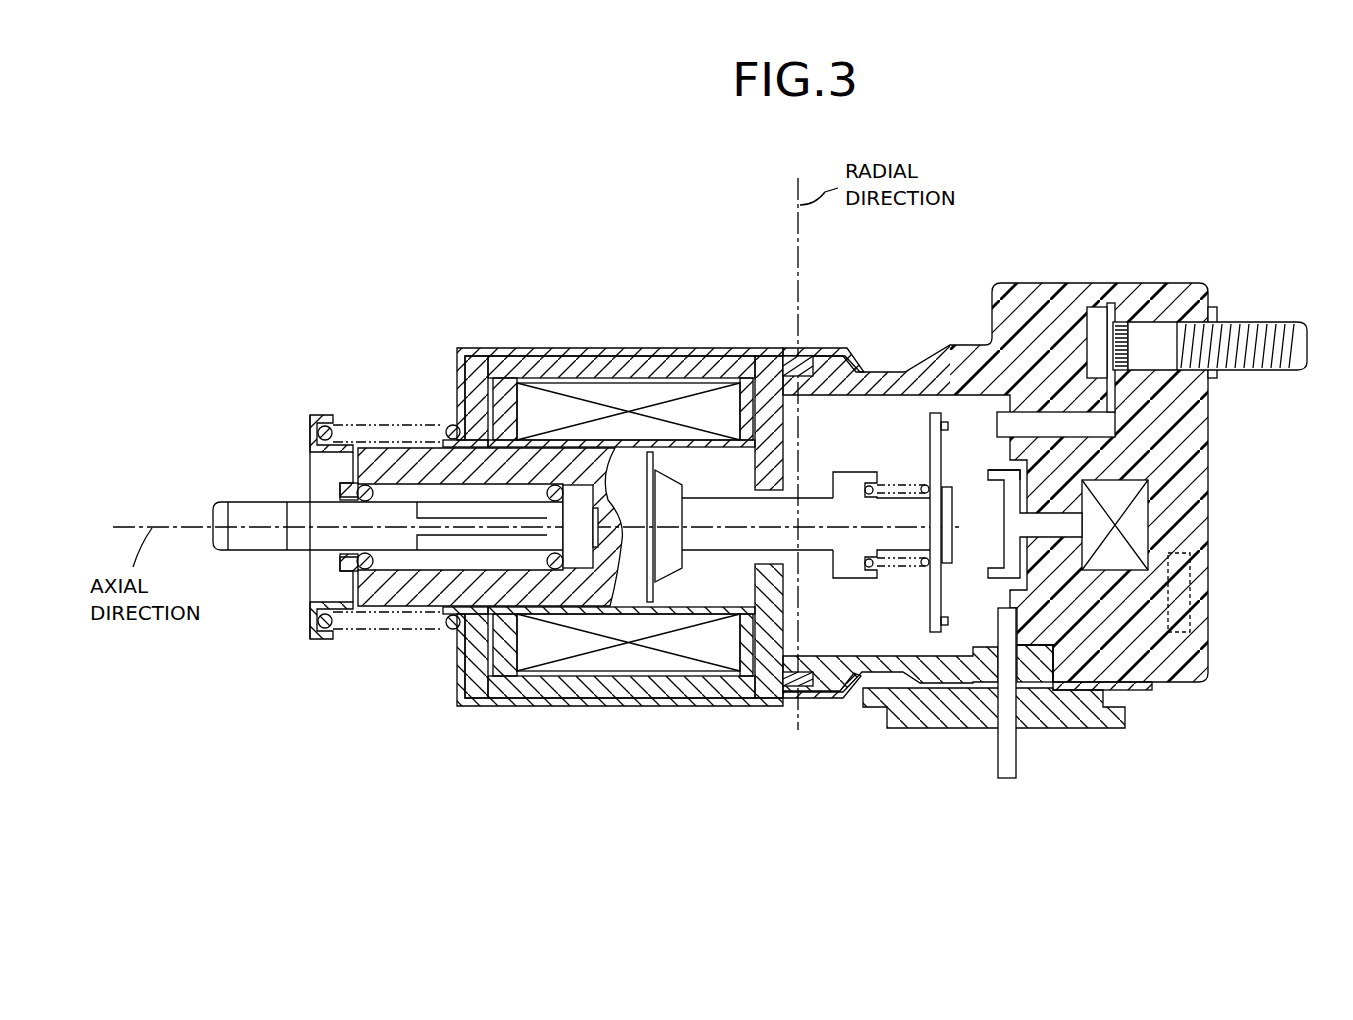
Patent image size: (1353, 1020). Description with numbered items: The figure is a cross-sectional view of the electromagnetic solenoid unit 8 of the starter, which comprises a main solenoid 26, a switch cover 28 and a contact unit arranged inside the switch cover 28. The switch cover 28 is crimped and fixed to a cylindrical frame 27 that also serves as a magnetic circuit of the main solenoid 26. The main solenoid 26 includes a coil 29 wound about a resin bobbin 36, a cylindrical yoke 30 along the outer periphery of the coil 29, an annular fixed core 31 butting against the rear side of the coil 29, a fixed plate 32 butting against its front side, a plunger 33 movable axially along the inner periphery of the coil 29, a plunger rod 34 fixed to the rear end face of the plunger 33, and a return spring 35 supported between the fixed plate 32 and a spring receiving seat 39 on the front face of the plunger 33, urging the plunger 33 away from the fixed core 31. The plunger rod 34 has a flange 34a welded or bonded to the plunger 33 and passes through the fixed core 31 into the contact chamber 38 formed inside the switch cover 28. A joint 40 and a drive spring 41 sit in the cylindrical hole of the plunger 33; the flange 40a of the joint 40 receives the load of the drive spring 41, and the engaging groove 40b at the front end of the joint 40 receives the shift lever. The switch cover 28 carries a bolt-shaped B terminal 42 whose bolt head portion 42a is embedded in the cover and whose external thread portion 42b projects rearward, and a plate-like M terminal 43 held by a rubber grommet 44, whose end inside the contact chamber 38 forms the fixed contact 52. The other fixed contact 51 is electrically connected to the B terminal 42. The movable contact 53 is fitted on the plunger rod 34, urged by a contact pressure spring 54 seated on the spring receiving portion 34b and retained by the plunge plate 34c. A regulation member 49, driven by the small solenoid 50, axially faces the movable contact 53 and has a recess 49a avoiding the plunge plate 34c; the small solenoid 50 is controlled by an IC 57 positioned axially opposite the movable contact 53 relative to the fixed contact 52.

The electromagnetic solenoid unit 8 is at (398, 250).
The main solenoid 26 is at (640, 348).
The cylindrical frame 27 is at (545, 378).
The switch cover 28 is at (1183, 447).
The coil 29 is at (605, 395).
The cylindrical yoke 30 is at (700, 358).
The annular fixed core 31 is at (768, 356).
The fixed plate 32 is at (477, 370).
The plunger 33 is at (395, 455).
The plunger rod 34 is at (712, 532).
The flange 34a is at (668, 562).
The spring receiving portion 34b is at (852, 572).
The plunge plate 34c is at (950, 566).
The return spring 35 is at (450, 626).
The bobbin 36 is at (596, 585).
The contact chamber 38 is at (818, 393).
The spring receiving seat 39 is at (322, 425).
The joint 40 is at (308, 530).
The flange 40a is at (578, 545).
The engaging groove 40b is at (250, 505).
The drive spring 41 is at (365, 592).
The B terminal 42 is at (1197, 262).
The bolt head portion 42a is at (1098, 315).
The external thread portion 42b is at (1255, 345).
The M terminal 43 is at (1008, 768).
The grommet 44 is at (1093, 720).
The regulation member 49 is at (1000, 517).
The recess 49a is at (996, 473).
The small solenoid 50 is at (1150, 497).
The fixed contact 51 is at (1015, 425).
The fixed contact 52 is at (1007, 620).
The movable contact 53 is at (930, 425).
The contact pressure spring 54 is at (925, 566).
The IC 57 is at (1190, 610).